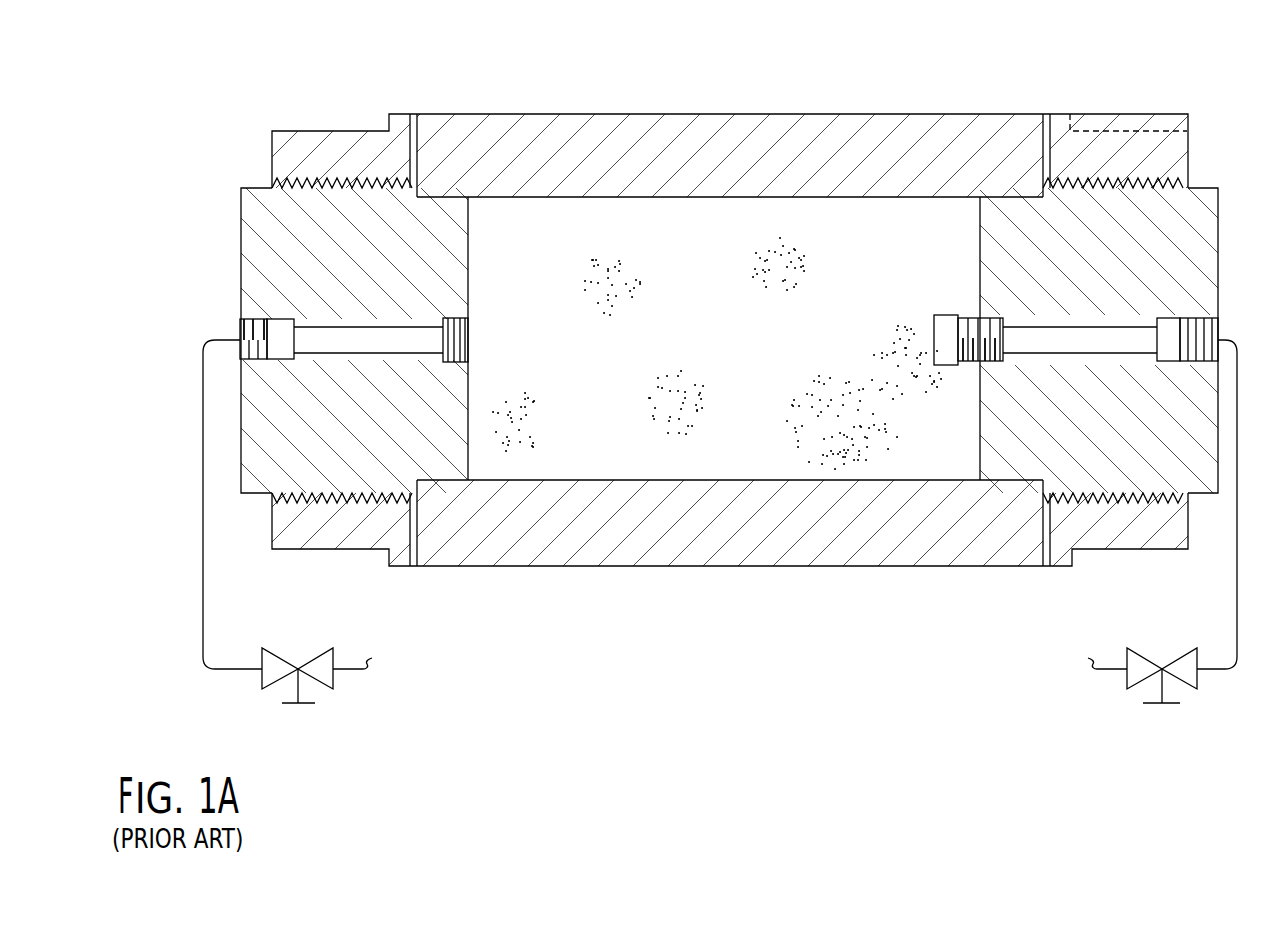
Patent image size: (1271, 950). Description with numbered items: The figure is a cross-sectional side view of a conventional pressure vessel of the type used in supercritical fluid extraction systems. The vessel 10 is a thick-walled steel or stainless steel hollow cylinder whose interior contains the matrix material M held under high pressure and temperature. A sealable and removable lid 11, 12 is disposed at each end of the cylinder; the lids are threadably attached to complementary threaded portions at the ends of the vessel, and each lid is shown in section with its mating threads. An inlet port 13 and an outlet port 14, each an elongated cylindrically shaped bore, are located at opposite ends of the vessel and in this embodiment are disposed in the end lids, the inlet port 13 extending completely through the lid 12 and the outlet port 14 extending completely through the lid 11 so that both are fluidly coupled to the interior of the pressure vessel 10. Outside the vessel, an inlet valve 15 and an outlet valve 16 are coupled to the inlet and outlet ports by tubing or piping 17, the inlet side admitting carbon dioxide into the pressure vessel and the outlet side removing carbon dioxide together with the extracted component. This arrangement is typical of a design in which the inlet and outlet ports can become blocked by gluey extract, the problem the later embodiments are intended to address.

The pressure vessel 10 is at (763, 114).
The lid 11 is at (1203, 207).
The lid 12 is at (262, 210).
The inlet port 13 is at (377, 348).
The outlet port 14 is at (1092, 347).
The inlet valve 15 is at (327, 689).
The outlet valve 16 is at (1137, 689).
The tubing or piping 17 is at (203, 619).
The matrix material M is at (837, 380).